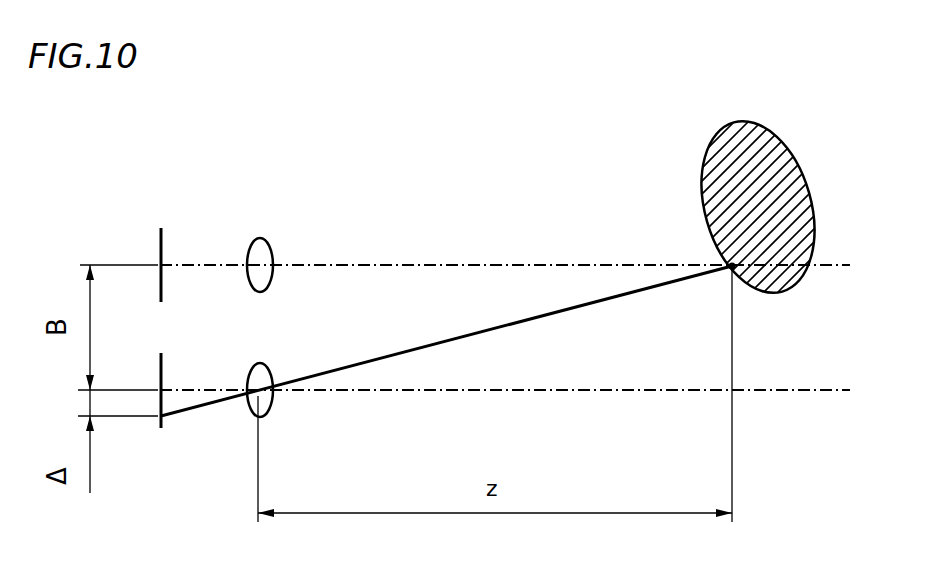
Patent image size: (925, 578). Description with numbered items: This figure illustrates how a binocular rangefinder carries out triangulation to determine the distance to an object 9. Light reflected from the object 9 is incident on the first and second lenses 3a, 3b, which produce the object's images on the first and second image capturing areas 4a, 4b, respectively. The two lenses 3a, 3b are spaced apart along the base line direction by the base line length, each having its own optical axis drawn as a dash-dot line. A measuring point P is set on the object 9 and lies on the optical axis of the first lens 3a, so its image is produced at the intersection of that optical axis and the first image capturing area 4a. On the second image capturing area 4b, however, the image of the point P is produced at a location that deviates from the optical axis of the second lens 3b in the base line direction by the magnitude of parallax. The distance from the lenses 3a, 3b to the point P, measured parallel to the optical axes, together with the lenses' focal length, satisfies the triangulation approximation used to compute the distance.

The object 9 is at (780, 143).
The first image capturing area 4a is at (161, 251).
The second image capturing area 4b is at (161, 378).
The first lens 3a is at (267, 252).
The second lens 3b is at (262, 378).
The point P is at (730, 268).